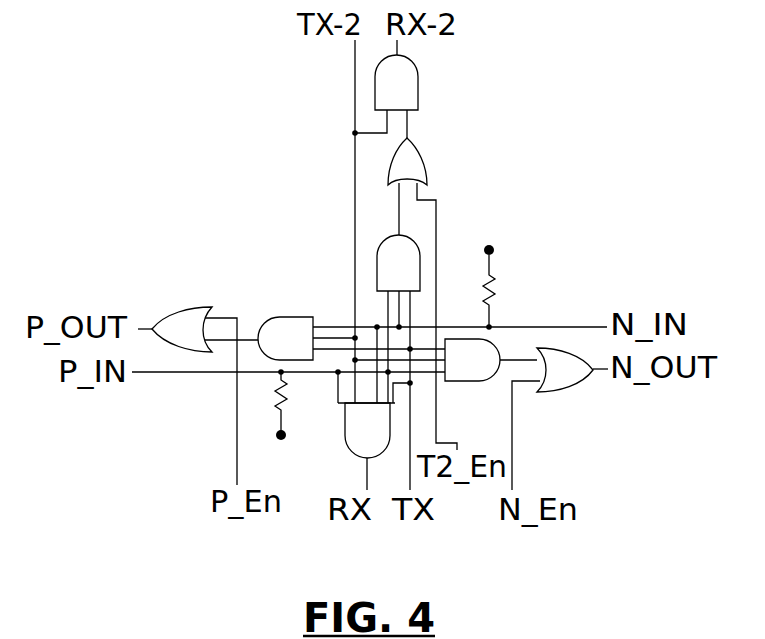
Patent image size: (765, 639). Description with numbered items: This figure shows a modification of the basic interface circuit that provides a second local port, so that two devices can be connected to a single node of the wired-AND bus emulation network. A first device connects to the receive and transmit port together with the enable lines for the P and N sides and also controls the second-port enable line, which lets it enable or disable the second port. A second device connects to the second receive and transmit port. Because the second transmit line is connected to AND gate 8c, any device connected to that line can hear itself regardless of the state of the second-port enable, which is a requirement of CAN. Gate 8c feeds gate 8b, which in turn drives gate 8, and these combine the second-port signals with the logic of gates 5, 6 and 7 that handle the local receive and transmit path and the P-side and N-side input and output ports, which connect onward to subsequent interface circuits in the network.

The AND gate (receive enable) 5 is at (376, 440).
The AND gate (P-channel output) 6 is at (300, 350).
The AND gate (N-channel output) 7 is at (465, 374).
The AND gate (second transmit) 8 is at (409, 278).
The OR gate 8b is at (423, 180).
The AND gate 8c is at (411, 100).